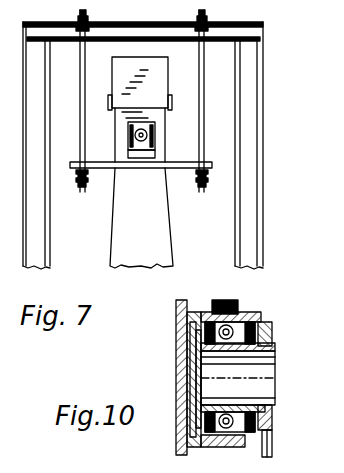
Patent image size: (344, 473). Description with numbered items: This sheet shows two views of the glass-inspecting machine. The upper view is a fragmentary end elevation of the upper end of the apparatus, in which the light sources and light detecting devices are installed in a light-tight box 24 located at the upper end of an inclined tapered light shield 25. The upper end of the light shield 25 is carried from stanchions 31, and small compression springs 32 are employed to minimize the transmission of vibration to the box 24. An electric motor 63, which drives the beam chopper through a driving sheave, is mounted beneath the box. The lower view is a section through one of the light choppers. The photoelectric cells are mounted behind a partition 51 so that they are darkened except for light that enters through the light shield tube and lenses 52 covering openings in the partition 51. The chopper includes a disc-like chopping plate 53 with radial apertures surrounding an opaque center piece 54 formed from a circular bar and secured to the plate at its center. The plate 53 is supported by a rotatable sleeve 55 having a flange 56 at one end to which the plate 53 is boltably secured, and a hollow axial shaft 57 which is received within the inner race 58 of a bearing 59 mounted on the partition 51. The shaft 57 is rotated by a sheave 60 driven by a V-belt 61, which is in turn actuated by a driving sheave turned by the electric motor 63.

In FIG. 7, the light-tight box 24 is at (156, 94).
In FIG. 7, the light shield 25 is at (138, 231).
In FIG. 7, the stanchions 31 is at (33, 213).
In FIG. 7, the compression springs 32 is at (77, 178).
In FIG. 7, the electric motor 63 is at (142, 141).
In FIG. 10, the partition 51 is at (181, 436).
In FIG. 10, the lenses 52 is at (189, 376).
In FIG. 10, the chopping plate 53 is at (192, 356).
In FIG. 10, the opaque center piece 54 is at (200, 378).
In FIG. 10, the rotatable sleeve 55 is at (276, 355).
In FIG. 10, the flange 56 is at (203, 318).
In FIG. 10, the hollow axial shaft 57 is at (262, 391).
In FIG. 10, the inner race 58 is at (270, 330).
In FIG. 10, the bearing 59 is at (240, 323).
In FIG. 10, the sheave 60 is at (274, 414).
In FIG. 10, the V-belt 61 is at (273, 443).